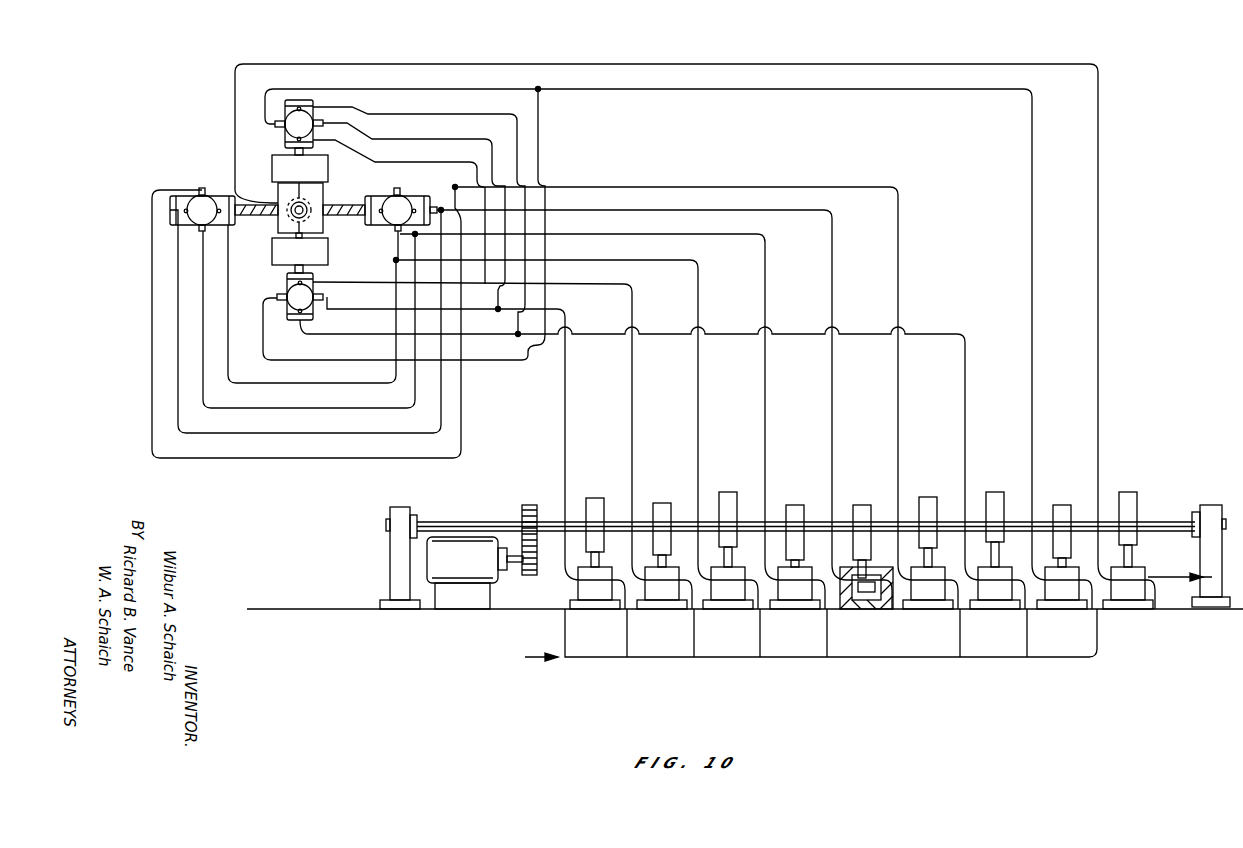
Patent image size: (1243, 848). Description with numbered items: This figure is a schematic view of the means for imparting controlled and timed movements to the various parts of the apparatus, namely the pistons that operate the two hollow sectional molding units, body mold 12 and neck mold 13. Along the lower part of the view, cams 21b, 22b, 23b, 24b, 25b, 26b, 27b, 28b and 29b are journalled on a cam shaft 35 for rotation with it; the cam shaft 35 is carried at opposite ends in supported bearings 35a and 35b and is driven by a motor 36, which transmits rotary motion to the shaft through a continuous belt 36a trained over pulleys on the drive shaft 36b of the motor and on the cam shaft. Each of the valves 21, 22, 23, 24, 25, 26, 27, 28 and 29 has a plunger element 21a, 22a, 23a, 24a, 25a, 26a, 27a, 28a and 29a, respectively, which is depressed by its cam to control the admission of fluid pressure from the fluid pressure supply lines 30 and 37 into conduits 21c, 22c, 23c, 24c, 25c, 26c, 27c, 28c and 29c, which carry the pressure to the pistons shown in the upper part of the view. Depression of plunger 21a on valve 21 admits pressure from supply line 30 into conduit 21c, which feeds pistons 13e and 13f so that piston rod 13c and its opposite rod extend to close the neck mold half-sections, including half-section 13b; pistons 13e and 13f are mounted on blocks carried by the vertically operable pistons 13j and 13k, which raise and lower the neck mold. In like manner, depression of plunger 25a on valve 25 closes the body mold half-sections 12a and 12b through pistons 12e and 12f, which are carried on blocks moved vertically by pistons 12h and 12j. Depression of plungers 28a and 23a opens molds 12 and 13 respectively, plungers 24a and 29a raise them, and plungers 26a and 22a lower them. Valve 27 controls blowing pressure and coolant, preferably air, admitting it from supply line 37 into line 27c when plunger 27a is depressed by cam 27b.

The body molding unit 12 is at (266, 254).
The body mold half-section 12a is at (317, 256).
The body mold half-section 12b is at (280, 163).
The piston 12e is at (283, 302).
The piston 12f is at (293, 112).
The piston 12h is at (288, 288).
The piston 12j is at (268, 127).
The neck molding unit 13 is at (268, 232).
The neck mold half-section 13b is at (280, 203).
The piston rod 13c is at (322, 201).
The piston 13e is at (374, 228).
The piston 13f is at (170, 200).
The piston 13j is at (393, 197).
The piston 13k is at (287, 202).
The valve 21 is at (873, 600).
The plunger element 21a is at (867, 565).
The cam 21b is at (867, 507).
The conduit 21c is at (178, 265).
The valve 22 is at (928, 583).
The plunger element 22a is at (933, 562).
The cam 22b is at (933, 499).
The conduit 22c is at (152, 230).
The valve 23 is at (728, 583).
The plunger element 23a is at (733, 562).
The cam 23b is at (741, 476).
The conduit 23c is at (228, 370).
The valve 24 is at (595, 583).
The plunger element 24a is at (600, 564).
The cam 24b is at (600, 500).
The conduit 24c is at (498, 155).
The valve 25 is at (995, 583).
The plunger element 25a is at (1000, 562).
The cam 25b is at (1008, 476).
The conduit 25c is at (518, 125).
The valve 26 is at (1062, 583).
The plunger element 26a is at (1067, 564).
The cam 26b is at (1067, 507).
The conduit 26c is at (707, 89).
The valve 27 is at (1128, 583).
The plunger element 27a is at (1133, 562).
The cam 27b is at (1133, 494).
The line 27c is at (630, 45).
The valve 28 is at (662, 583).
The plunger element 28a is at (667, 564).
The cam 28b is at (667, 505).
The conduit 28c is at (482, 176).
The valve 29 is at (795, 583).
The plunger element 29a is at (800, 564).
The cam 29b is at (800, 507).
The conduit 29c is at (203, 300).
The fluid pressure supply line 30 is at (592, 660).
The cam shaft 35 is at (503, 522).
The bearing 35a is at (400, 513).
The bearing 35b is at (1212, 517).
The motor 36 is at (463, 543).
The continuous belt 36a is at (535, 548).
The drive shaft 36b is at (513, 570).
The fluid pressure supply line 37 is at (1173, 580).